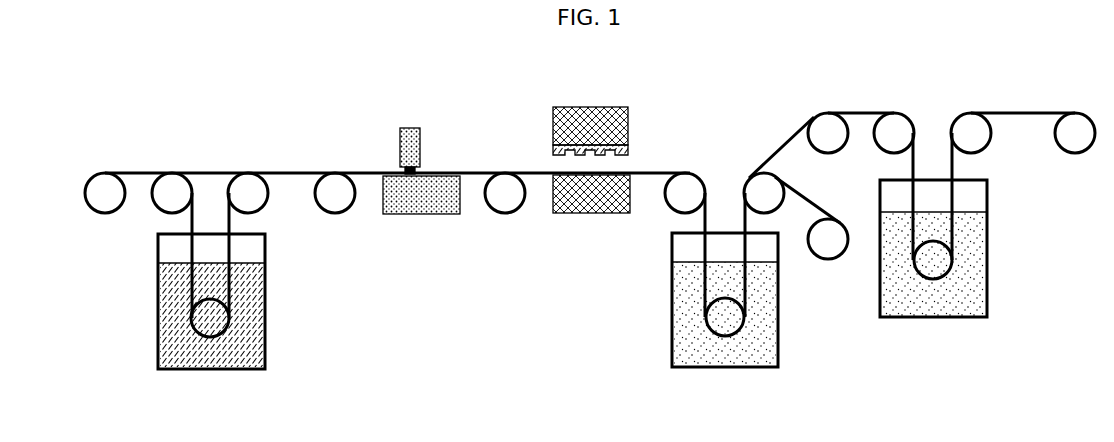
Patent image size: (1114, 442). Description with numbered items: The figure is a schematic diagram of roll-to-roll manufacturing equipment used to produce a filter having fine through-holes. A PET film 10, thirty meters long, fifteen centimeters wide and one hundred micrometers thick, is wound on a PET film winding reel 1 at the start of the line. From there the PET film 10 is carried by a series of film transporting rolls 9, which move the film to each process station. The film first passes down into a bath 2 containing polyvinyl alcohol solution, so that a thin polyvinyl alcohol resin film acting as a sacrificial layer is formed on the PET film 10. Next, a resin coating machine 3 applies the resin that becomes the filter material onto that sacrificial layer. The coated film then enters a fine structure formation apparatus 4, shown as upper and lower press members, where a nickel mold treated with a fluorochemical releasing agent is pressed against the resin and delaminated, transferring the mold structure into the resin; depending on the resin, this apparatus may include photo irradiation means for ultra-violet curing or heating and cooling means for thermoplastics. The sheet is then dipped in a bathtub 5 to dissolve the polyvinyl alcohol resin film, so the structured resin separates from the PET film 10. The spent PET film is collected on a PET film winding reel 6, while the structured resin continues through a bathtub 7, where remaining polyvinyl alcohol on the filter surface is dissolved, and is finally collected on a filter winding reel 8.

The PET film winding reel 1 is at (103, 195).
The bath 2 is at (178, 355).
The resin coating machine 3 is at (405, 153).
The fine structure formation apparatus 4 is at (592, 122).
The bathtub 5 is at (698, 352).
The PET film winding reel 6 is at (828, 240).
The bathtub 7 is at (922, 298).
The filter winding reel 8 is at (1073, 133).
The film transporting roll 9 is at (245, 193).
The PET film 10 is at (150, 177).